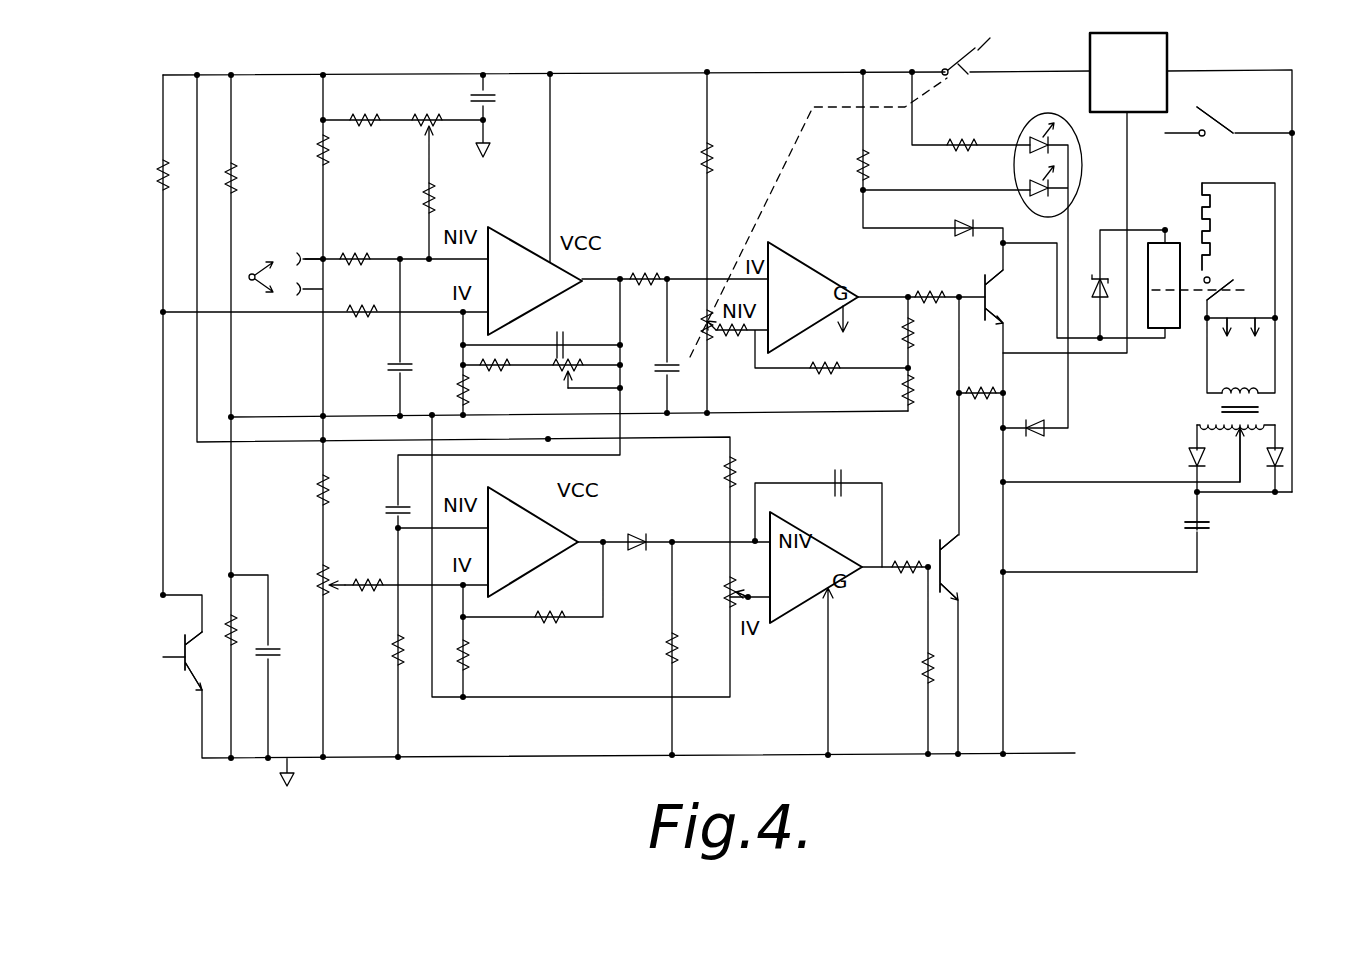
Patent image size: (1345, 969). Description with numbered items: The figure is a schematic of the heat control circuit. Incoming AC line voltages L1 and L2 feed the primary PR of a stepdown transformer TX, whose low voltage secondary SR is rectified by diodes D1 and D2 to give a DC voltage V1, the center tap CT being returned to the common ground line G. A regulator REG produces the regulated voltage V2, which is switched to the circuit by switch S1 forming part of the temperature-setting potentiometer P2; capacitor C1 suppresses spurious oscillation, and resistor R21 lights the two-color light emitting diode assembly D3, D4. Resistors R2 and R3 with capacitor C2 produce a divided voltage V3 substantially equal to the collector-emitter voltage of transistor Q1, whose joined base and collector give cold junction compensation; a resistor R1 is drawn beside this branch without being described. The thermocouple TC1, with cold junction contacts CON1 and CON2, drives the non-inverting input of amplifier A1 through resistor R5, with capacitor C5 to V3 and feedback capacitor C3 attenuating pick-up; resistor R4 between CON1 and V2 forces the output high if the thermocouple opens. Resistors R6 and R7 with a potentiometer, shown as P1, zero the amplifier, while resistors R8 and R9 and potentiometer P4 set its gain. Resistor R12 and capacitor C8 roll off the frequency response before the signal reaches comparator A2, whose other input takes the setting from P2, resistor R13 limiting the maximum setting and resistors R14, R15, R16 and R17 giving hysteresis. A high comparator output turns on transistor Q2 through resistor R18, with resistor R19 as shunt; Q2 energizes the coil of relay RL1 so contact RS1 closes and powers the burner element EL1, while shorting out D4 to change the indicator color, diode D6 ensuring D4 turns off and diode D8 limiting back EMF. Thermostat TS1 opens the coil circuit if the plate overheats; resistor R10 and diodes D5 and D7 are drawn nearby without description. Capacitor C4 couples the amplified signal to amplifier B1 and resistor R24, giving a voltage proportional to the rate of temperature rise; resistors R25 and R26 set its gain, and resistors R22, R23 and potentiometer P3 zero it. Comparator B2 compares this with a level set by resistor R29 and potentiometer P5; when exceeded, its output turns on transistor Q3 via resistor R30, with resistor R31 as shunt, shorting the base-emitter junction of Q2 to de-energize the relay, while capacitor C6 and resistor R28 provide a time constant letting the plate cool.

The resistor R1 is at (145, 169).
The resistor R2 is at (246, 173).
The resistor R3 is at (236, 612).
The resistor R4 is at (347, 226).
The resistor R5 is at (361, 245).
The resistor R6 is at (373, 137).
The resistor R7 is at (443, 194).
The resistor R8 is at (446, 389).
The resistor R9 is at (493, 378).
The resistor R10 is at (840, 160).
The resistor R12 is at (640, 263).
The resistor R13 is at (681, 152).
The resistor R14 is at (732, 344).
The resistor R15 is at (810, 381).
The resistor R16 is at (888, 328).
The resistor R17 is at (883, 389).
The resistor R18 is at (921, 284).
The resistor R19 is at (979, 376).
The resistor R21 is at (964, 131).
The resistor R22 is at (299, 482).
The resistor R23 is at (364, 568).
The resistor R24 is at (378, 643).
The resistor R25 is at (487, 662).
The resistor R26 is at (561, 602).
The resistor R28 is at (649, 642).
The resistor R29 is at (704, 465).
The resistor R30 is at (897, 583).
The resistor R31 is at (906, 666).
The potentiometer P1 is at (427, 112).
The potentiometer P2 is at (694, 318).
The potentiometer P3 is at (314, 572).
The potentiometer P4 is at (555, 372).
The potentiometer P5 is at (723, 592).
The capacitor C1 is at (855, 322).
The capacitor C2 is at (280, 656).
The feedback capacitor C3 is at (573, 332).
The capacitor C4 is at (386, 512).
The capacitor C5 is at (413, 348).
The capacitor C6 is at (832, 478).
The capacitor C8 is at (652, 353).
The operational amplifier A1 is at (535, 281).
The integrated circuit amplifier A2 is at (813, 297).
The amplifier B1 is at (533, 542).
The amplifier B2 is at (816, 567).
The diode D1 is at (1188, 458).
The diode D2 is at (1284, 460).
The light emitting diode D3 is at (1043, 159).
The light emitting diode D4 is at (1020, 194).
The diode D5 is at (945, 217).
The diode D6 is at (1036, 414).
The diode D7 is at (629, 529).
The diode D8 is at (1093, 272).
The transistor Q1 is at (195, 686).
The transistor Q2 is at (977, 286).
The transistor Q3 is at (948, 540).
The thermocouple TC1 is at (250, 274).
The cold junction CON1 is at (303, 253).
The cold junction CON2 is at (303, 296).
The switch S1 is at (966, 48).
The regulator REG is at (1128, 72).
The thermostat TS1 is at (1230, 111).
The burner element EL1 is at (1228, 226).
The relay contact RS1 is at (1212, 278).
The relay RL1 is at (1166, 330).
The incoming AC line voltage L1 is at (1222, 341).
The incoming AC line voltage L2 is at (1252, 341).
The primary PR is at (1258, 396).
The stepdown transformer TX is at (1262, 410).
The low voltage secondary SR is at (1215, 420).
The center tap CT is at (1243, 433).
The DC positive voltage V1 is at (1210, 70).
The regulated output voltage V2 is at (1025, 70).
The divided voltage V3 is at (270, 414).
The ground line G is at (1036, 738).